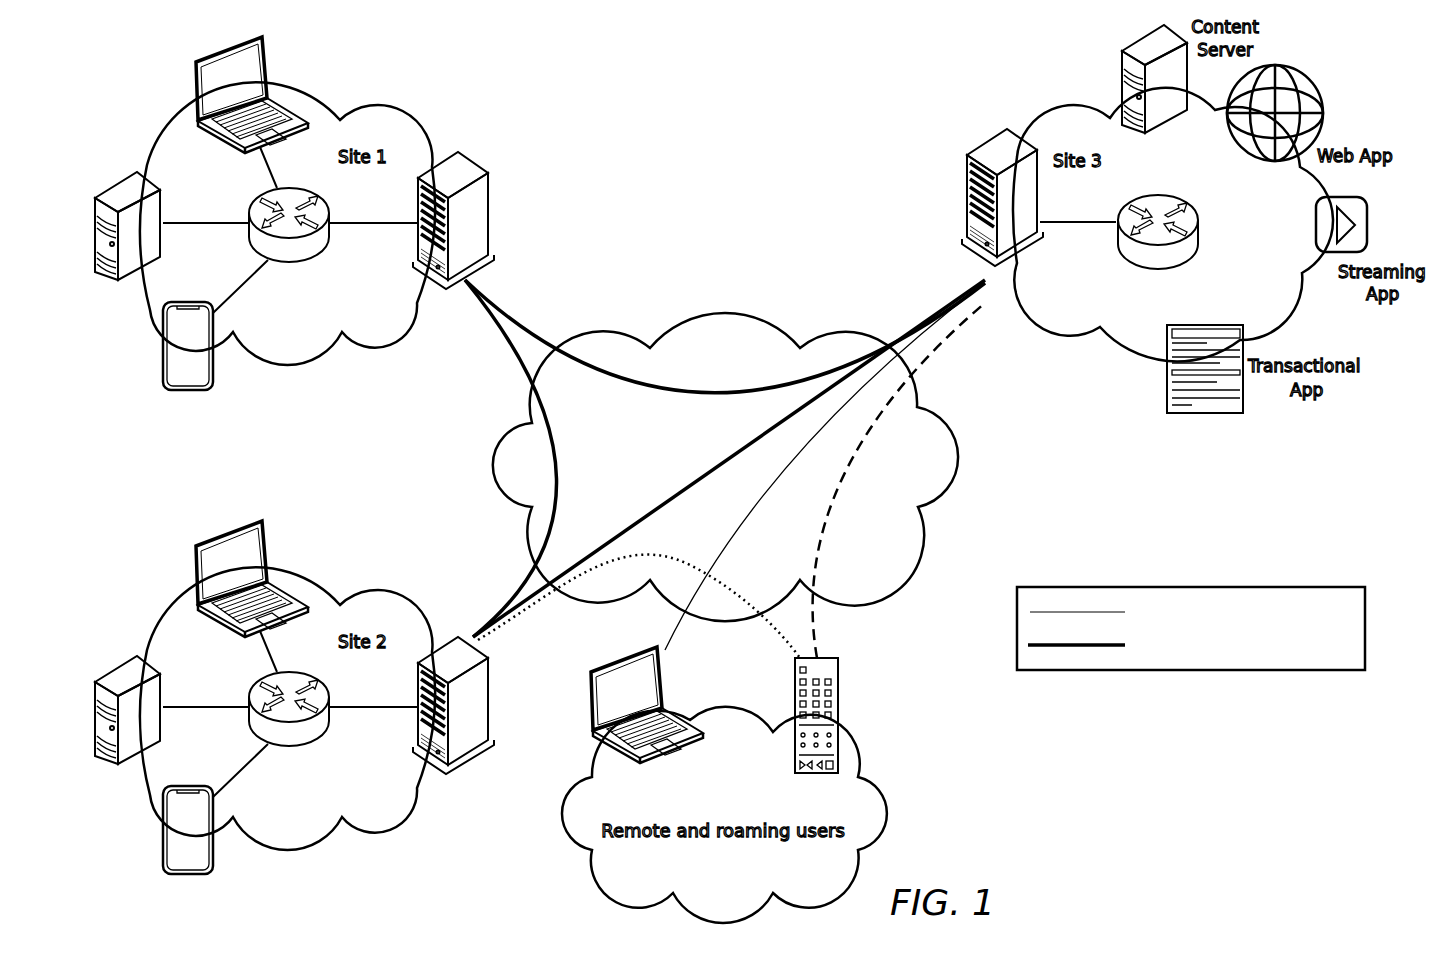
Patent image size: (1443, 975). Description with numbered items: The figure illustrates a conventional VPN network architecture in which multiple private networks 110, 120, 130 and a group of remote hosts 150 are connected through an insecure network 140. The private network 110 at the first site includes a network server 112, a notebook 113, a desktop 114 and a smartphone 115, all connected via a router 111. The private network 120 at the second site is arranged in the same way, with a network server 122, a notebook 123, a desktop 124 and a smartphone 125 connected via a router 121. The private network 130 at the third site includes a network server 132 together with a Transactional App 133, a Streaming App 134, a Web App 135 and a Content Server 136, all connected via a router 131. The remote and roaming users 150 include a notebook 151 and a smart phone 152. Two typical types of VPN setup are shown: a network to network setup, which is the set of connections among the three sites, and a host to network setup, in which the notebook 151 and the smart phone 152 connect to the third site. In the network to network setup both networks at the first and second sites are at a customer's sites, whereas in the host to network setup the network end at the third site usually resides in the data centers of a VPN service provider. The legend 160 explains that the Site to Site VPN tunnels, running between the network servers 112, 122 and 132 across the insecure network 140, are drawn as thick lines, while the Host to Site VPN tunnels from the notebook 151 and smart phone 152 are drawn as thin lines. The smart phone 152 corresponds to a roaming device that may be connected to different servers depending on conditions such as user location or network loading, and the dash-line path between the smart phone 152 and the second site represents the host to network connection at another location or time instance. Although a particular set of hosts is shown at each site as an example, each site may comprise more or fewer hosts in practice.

The private network at Site 1 110 is at (362, 60).
The router 111 is at (307, 248).
The network server 112 is at (493, 215).
The notebook 113 is at (192, 74).
The desktop 114 is at (125, 175).
The smartphone 115 is at (161, 345).
The private network at Site 2 120 is at (362, 545).
The router 121 is at (307, 732).
The network server 122 is at (495, 681).
The notebook 123 is at (192, 559).
The desktop 124 is at (125, 659).
The smartphone 125 is at (161, 829).
The private network at Site 3 130 is at (1027, 66).
The router 131 is at (1138, 246).
The network server 132 is at (967, 218).
The Transactional App 133 is at (1166, 388).
The Streaming App 134 is at (1315, 214).
The Web App 135 is at (1238, 142).
The Content Server 136 is at (1126, 46).
The insecure network 140 is at (793, 275).
The remote hosts 150 is at (900, 755).
The notebook 151 is at (590, 724).
The smart phone 152 is at (840, 698).
The VPN tunnel legend 160 is at (1218, 689).